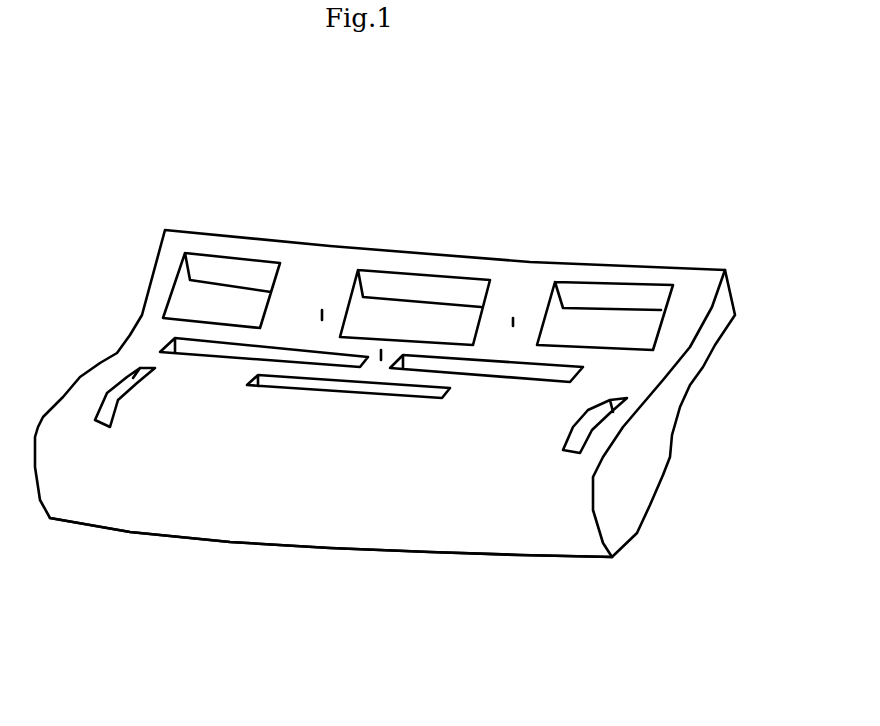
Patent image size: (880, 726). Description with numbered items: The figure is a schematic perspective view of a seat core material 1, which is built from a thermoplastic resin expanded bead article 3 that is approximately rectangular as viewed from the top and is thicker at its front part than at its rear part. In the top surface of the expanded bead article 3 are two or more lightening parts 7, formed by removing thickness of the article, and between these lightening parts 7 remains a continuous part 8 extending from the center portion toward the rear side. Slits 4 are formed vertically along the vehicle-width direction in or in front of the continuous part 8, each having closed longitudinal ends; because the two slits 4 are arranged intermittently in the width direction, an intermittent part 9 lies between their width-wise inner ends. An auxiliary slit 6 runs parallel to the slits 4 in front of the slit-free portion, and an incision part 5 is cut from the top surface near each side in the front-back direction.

The seat core material 1 is at (652, 257).
The thermoplastic resin expanded bead article 3 is at (477, 455).
The slit 4 is at (289, 355).
The incision part 5 is at (126, 383).
The auxiliary slit 6 is at (320, 390).
The lightening part 7 is at (220, 297).
The continuous part 8 is at (322, 318).
The intermittent part 9 is at (381, 360).